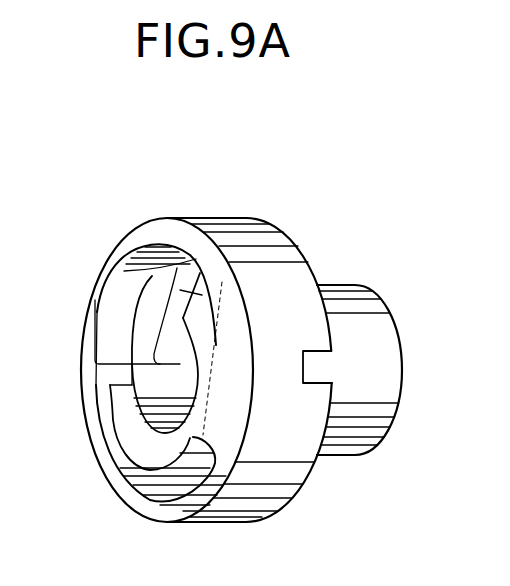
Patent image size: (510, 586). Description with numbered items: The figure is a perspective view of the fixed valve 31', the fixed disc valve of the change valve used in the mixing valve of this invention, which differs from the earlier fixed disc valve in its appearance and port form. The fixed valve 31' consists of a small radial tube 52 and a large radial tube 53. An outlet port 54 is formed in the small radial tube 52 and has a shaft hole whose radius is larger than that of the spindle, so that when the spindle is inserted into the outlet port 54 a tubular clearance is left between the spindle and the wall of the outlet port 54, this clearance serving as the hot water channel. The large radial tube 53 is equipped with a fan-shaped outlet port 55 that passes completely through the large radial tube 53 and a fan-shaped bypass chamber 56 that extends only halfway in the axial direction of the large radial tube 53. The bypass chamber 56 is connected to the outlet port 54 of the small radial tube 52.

The fixed valve 31' is at (197, 327).
The small radial tube 52 is at (373, 377).
The large radial tube 53 is at (281, 277).
The outlet port 54 is at (167, 382).
The fan-shaped outlet port 55 is at (177, 462).
The fan-shaped bypass chamber 56 is at (123, 277).